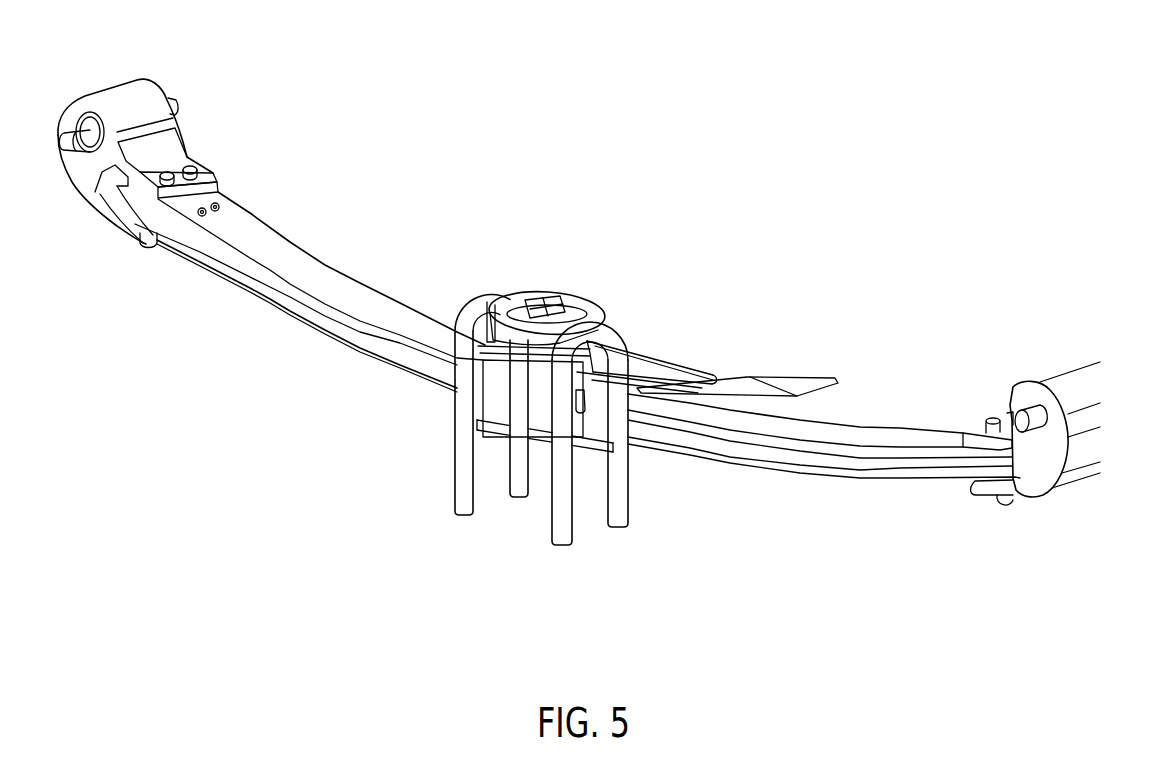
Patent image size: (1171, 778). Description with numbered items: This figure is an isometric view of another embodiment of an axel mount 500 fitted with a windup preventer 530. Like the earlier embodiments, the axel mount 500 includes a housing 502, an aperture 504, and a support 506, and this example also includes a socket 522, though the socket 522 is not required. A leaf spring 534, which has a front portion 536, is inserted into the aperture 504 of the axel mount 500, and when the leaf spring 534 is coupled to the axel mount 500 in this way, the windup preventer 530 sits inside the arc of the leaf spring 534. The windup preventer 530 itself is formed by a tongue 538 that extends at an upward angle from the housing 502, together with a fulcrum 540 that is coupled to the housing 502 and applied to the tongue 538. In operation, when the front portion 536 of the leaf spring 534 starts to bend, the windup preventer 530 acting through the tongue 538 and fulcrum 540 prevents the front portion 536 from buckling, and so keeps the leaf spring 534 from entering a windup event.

The axel mount 500 is at (579, 290).
The housing 502 is at (490, 403).
The aperture 504 is at (554, 403).
The support 506 is at (468, 332).
The socket 522 is at (550, 293).
The windup preventer 530 is at (727, 327).
The leaf spring 534 is at (315, 170).
The front portion 536 is at (893, 427).
The tongue 538 is at (783, 377).
The fulcrum 540 is at (620, 370).